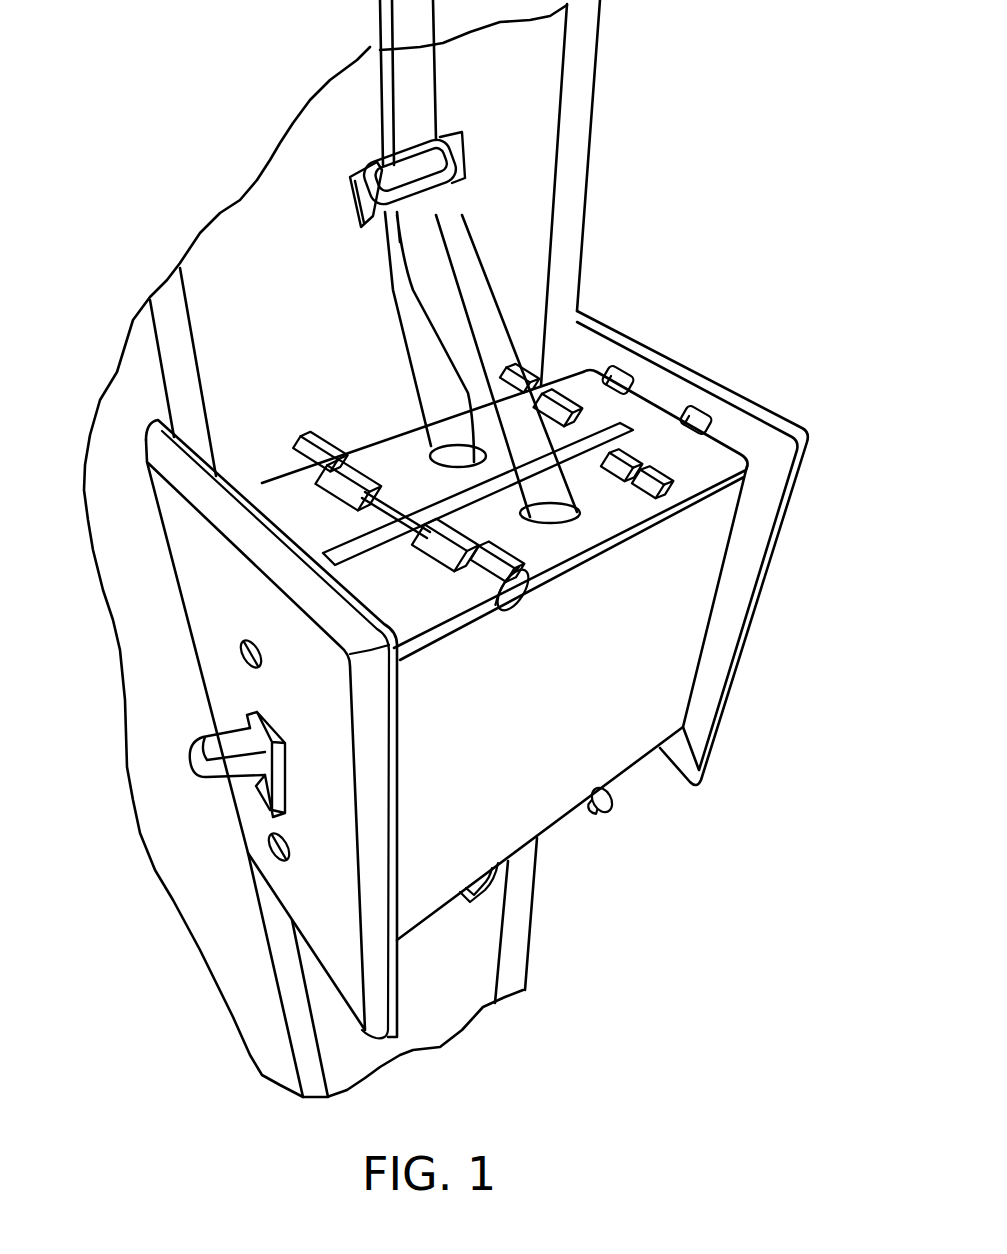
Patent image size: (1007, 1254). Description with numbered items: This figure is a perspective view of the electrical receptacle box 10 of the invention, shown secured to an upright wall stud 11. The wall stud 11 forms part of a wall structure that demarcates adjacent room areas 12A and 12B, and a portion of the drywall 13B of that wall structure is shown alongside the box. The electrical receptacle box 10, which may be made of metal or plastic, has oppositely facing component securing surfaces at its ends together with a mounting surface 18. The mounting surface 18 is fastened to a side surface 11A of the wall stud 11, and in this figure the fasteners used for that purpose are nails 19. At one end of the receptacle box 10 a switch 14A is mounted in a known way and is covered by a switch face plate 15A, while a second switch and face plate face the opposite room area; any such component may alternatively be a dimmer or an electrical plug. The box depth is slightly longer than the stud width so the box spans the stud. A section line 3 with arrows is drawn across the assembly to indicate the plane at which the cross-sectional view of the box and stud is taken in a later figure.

The section line 3 is at (704, 307).
The electrical receptacle box 10 is at (605, 721).
The wall stud 11 is at (491, 235).
The side surface of the wall stud 11A is at (322, 322).
The room area 12A is at (90, 510).
The room area 12B is at (650, 312).
The drywall 13B is at (767, 455).
The switch 14A is at (202, 772).
The switch face plate 15A is at (325, 705).
The mounting surface 18 is at (278, 476).
The nails 19 is at (378, 509).